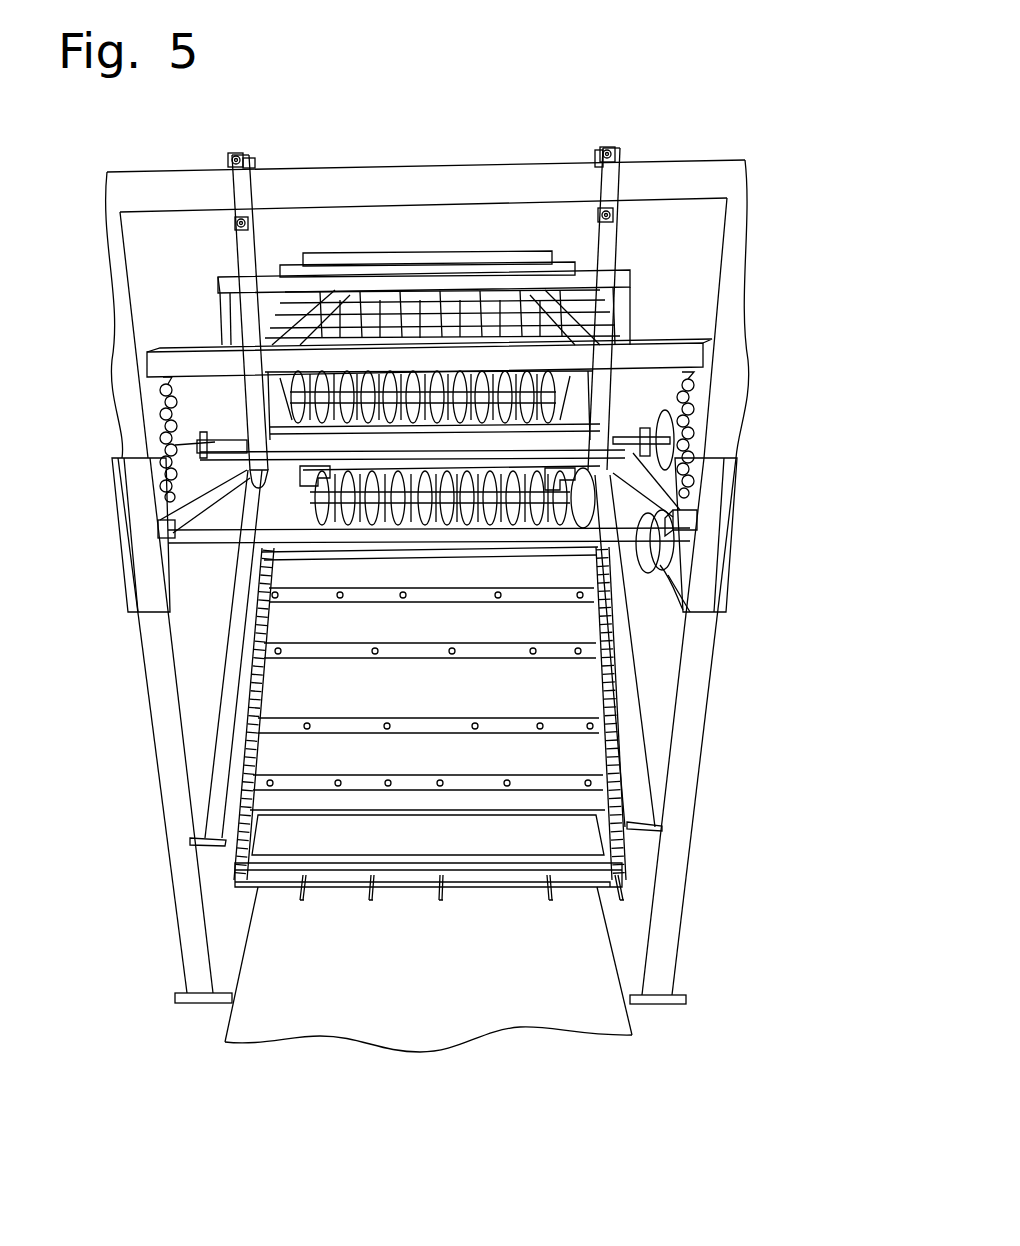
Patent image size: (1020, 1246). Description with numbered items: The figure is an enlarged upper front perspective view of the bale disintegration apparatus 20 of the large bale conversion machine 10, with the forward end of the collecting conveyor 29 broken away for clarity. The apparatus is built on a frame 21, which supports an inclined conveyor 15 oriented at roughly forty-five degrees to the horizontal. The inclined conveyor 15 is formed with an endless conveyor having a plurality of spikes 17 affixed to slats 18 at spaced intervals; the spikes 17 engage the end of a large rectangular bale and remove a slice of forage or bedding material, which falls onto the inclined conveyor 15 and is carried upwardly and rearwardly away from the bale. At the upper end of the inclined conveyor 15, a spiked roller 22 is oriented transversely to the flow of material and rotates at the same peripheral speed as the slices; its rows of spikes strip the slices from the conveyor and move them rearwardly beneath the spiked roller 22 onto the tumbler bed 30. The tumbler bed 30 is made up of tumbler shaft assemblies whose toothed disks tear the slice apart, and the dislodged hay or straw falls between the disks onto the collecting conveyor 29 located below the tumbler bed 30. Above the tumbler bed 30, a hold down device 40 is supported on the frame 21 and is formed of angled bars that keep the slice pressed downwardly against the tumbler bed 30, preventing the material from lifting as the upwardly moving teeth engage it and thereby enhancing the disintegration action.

The large bale conversion machine 10 is at (406, 152).
The bale disintegration apparatus 20 is at (648, 254).
The frame 21 is at (182, 848).
The spiked roller 22 is at (292, 442).
The tumbler bed 30 is at (568, 396).
The hold down device 40 is at (300, 284).
The inclined conveyor 15 is at (292, 688).
The spikes 17 is at (559, 898).
The slats 18 is at (406, 888).
The collecting conveyor 29 is at (541, 1003).